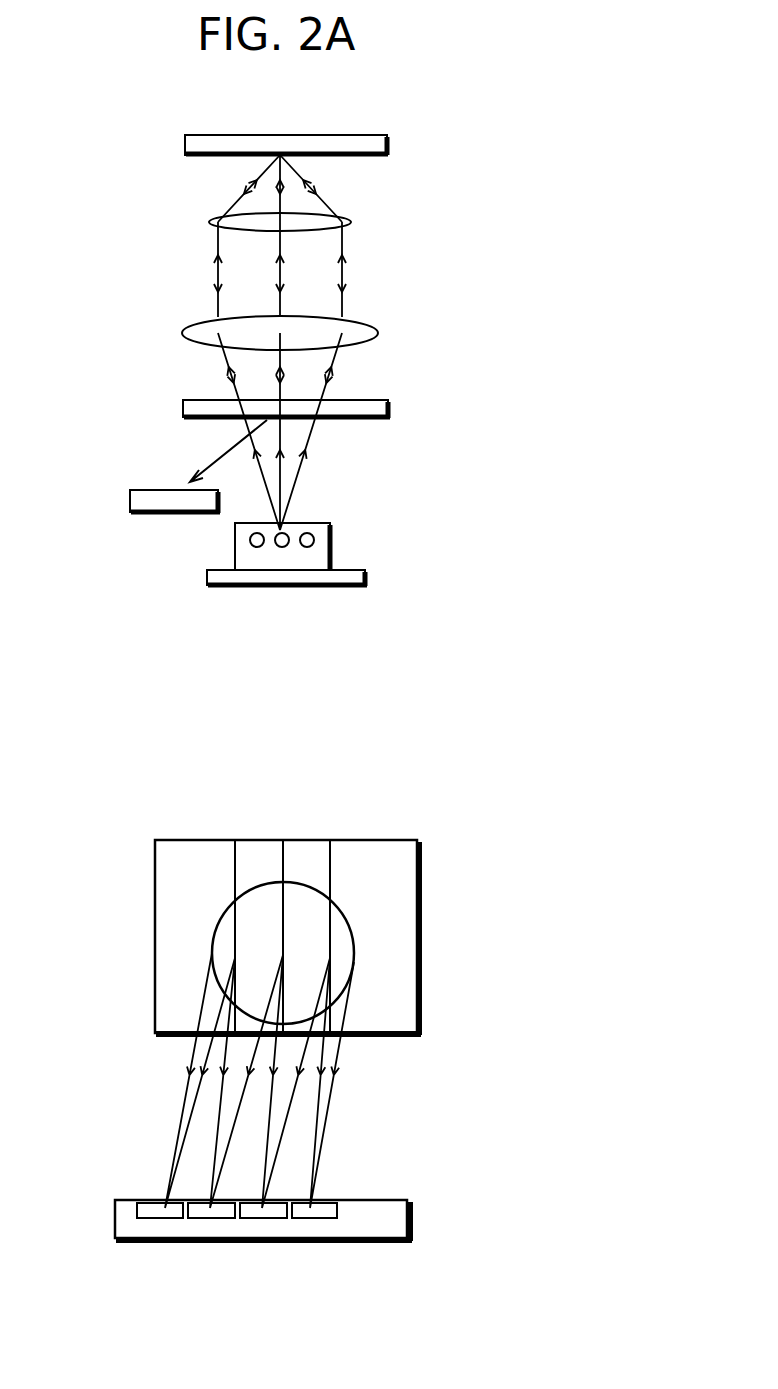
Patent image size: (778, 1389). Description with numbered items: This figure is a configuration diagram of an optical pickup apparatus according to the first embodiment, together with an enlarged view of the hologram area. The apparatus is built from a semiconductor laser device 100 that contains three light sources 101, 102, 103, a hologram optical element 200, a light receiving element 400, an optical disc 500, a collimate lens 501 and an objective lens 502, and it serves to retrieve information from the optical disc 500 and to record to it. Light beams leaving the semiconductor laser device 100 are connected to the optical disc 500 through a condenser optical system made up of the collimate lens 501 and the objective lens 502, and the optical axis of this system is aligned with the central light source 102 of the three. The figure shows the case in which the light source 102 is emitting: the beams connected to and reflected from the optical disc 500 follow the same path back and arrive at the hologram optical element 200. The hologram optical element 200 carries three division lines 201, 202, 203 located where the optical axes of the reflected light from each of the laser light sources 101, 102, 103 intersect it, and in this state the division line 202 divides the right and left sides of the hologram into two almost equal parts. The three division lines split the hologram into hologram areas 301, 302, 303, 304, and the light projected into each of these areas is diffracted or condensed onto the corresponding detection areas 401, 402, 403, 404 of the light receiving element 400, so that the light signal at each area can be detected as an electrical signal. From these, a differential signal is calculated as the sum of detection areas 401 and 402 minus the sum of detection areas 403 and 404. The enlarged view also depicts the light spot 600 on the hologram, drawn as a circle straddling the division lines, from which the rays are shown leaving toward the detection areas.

The semiconductor laser device 100 is at (340, 578).
The light source 101 is at (253, 548).
The central light source 102 is at (282, 548).
The light source 103 is at (305, 548).
The hologram optical element 200 is at (410, 385).
The division line 201 is at (233, 842).
The division line 202 is at (283, 842).
The division line 203 is at (330, 842).
The hologram area 301 is at (211, 861).
The hologram area 302 is at (258, 861).
The hologram area 303 is at (306, 861).
The hologram area 304 is at (356, 861).
The light receiving element 400 is at (143, 490).
The detection area 401 is at (140, 1243).
The detection area 402 is at (208, 1242).
The detection area 403 is at (248, 1242).
The detection area 404 is at (318, 1243).
The optical disc 500 is at (233, 135).
The collimate lens 501 is at (370, 328).
The objective lens 502 is at (388, 198).
The light beam cross section 600 is at (353, 938).